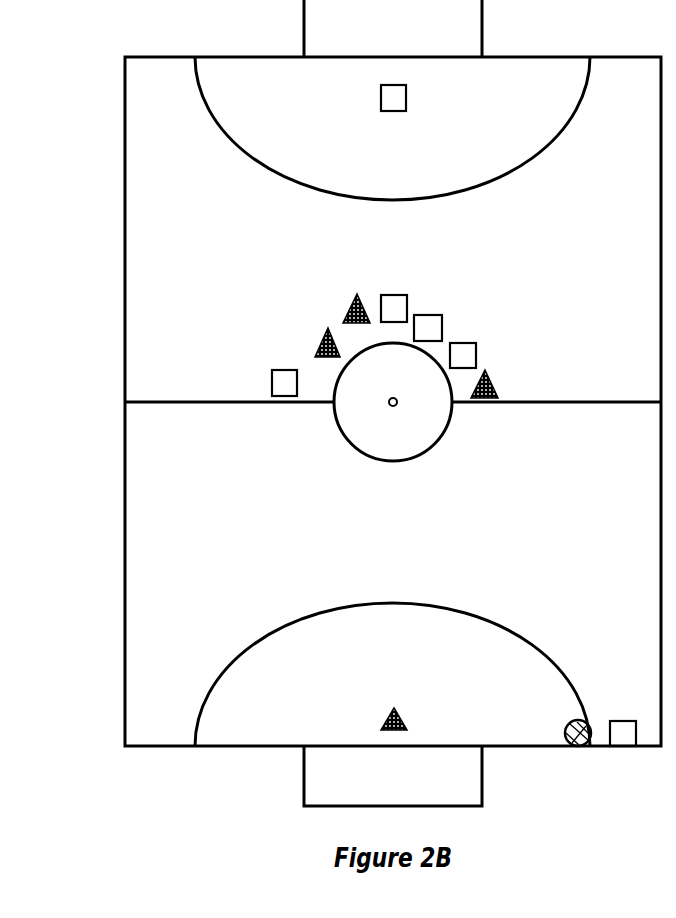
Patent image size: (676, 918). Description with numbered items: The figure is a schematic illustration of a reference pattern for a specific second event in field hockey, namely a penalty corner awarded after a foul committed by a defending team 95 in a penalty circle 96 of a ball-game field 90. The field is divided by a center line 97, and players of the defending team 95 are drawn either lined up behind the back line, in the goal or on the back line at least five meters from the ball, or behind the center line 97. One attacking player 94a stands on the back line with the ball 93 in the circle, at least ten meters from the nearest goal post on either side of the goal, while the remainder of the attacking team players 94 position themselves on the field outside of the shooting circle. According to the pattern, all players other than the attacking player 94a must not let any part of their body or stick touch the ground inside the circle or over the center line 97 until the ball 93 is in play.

The ball-game field 90 is at (125, 90).
The ball 93 is at (578, 720).
The attacking team players 94 is at (393, 97).
The attacking player 94a is at (622, 721).
The defending team 95 is at (392, 708).
The penalty circle 96 is at (393, 602).
The center line 97 is at (202, 404).